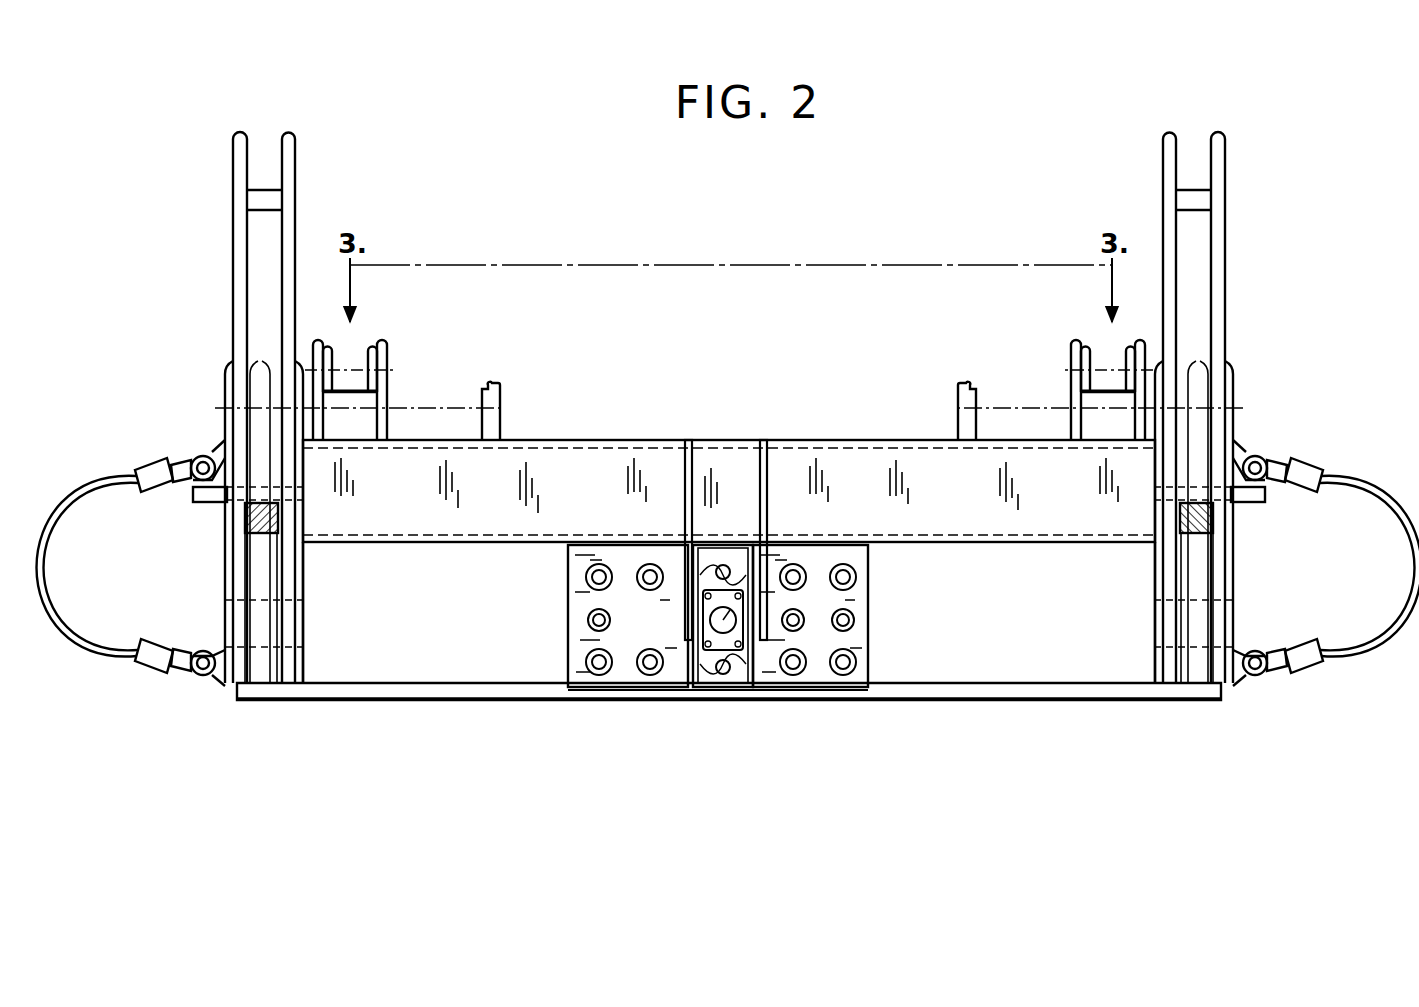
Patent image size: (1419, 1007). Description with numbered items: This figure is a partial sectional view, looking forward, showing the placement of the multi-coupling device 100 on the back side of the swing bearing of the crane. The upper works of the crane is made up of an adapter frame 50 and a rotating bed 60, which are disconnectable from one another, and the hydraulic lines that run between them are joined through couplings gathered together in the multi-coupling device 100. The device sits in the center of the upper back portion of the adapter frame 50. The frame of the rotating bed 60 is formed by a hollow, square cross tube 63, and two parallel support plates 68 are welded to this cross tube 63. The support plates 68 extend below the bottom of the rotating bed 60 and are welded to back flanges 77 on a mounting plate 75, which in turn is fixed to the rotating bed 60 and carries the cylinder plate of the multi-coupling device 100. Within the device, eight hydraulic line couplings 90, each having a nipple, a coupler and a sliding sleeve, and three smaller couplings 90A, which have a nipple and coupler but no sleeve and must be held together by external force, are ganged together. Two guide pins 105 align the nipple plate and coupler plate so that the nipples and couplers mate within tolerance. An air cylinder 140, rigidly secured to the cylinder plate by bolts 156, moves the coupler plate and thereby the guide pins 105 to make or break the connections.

The adapter frame 50 is at (510, 703).
The rotating bed 60 is at (1230, 282).
The cross tube 63 is at (905, 456).
The support plates 68 is at (684, 477).
The mounting plate 75 is at (703, 689).
The back flanges 77 is at (687, 652).
The hydraulic line couplings 90 is at (630, 560).
The smaller couplings 90A is at (588, 620).
The multi-coupling device 100 is at (672, 701).
The guide pins 105 is at (722, 564).
The air cylinder 140 is at (740, 590).
The bolts 156 is at (690, 603).